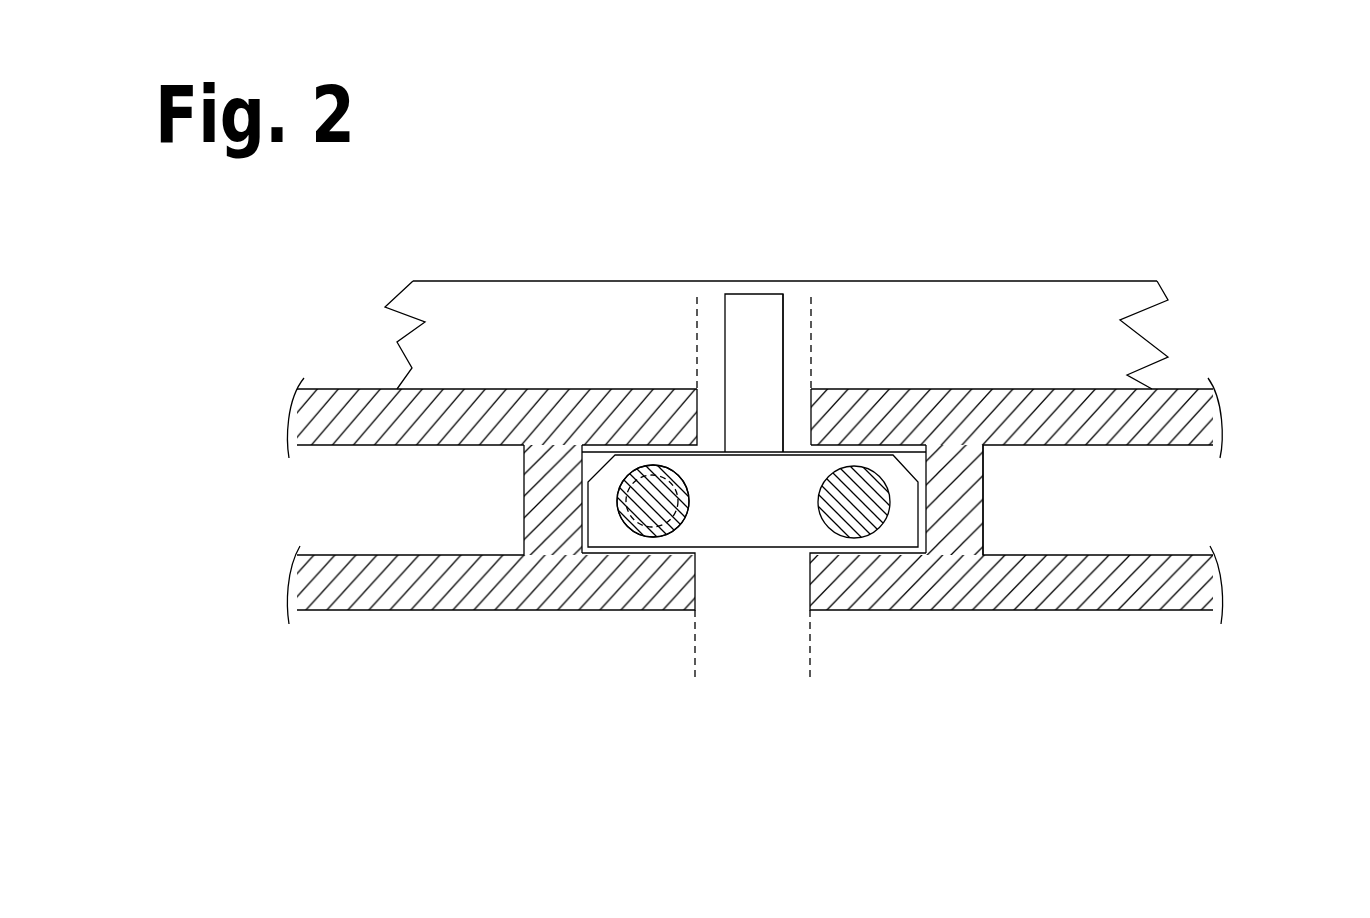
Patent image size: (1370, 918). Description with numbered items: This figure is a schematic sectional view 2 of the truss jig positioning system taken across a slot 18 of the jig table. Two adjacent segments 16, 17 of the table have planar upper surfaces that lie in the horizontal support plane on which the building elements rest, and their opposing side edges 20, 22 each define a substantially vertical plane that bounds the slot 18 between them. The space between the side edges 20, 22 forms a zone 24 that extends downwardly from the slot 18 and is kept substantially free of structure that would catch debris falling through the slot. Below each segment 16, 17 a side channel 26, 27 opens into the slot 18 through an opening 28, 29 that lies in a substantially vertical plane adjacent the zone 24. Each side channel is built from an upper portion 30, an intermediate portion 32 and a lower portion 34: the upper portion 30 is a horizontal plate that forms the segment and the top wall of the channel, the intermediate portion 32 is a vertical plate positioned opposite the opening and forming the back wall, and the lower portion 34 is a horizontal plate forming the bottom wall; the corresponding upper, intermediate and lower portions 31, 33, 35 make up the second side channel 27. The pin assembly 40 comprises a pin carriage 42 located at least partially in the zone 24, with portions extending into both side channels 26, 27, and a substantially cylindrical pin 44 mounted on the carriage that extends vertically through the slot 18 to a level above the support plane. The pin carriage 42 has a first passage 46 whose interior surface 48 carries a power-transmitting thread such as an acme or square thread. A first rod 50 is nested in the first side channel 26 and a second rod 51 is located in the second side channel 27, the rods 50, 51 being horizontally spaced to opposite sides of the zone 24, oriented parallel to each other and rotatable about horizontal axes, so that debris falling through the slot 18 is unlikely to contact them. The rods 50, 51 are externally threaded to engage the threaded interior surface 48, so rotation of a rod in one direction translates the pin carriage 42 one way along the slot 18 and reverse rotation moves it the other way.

The sealing arrangement 2 is at (447, 352).
The segment 16 is at (472, 402).
The segment 17 is at (915, 453).
The slot 18 is at (797, 417).
The side edge 20 is at (693, 410).
The side edge 22 is at (868, 412).
The zone 24 is at (755, 593).
The side channel 26 is at (590, 452).
The side channel 27 is at (958, 392).
The opening 28 is at (702, 557).
The opening 29 is at (803, 557).
The upper portion 30 is at (611, 405).
The upper pocket wall 31 is at (928, 410).
The intermediate portion 32 is at (517, 493).
The right channel 33 is at (985, 500).
The lower portion 34 is at (568, 585).
The lower housing plate 35 is at (957, 577).
The pin assembly 40 is at (798, 312).
The pin carriage 42 is at (800, 529).
The pin 44 is at (748, 318).
The first passage 46 is at (680, 523).
The interior surface 48 is at (632, 487).
The rod 50 is at (635, 527).
The second rod 51 is at (862, 502).